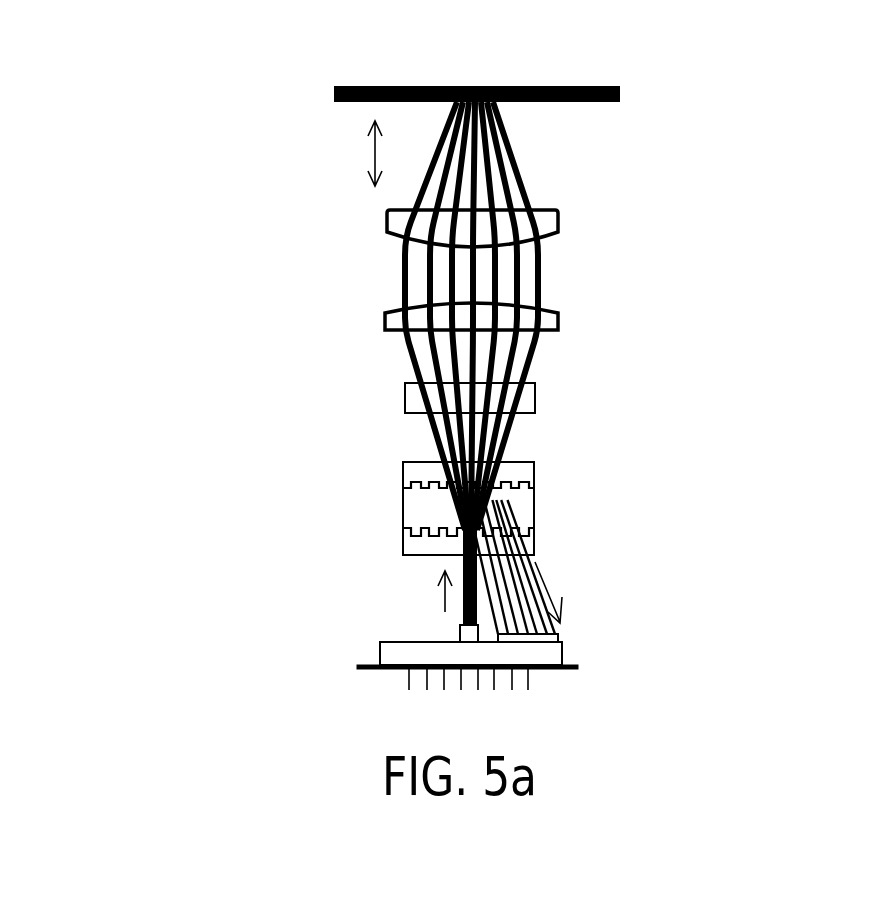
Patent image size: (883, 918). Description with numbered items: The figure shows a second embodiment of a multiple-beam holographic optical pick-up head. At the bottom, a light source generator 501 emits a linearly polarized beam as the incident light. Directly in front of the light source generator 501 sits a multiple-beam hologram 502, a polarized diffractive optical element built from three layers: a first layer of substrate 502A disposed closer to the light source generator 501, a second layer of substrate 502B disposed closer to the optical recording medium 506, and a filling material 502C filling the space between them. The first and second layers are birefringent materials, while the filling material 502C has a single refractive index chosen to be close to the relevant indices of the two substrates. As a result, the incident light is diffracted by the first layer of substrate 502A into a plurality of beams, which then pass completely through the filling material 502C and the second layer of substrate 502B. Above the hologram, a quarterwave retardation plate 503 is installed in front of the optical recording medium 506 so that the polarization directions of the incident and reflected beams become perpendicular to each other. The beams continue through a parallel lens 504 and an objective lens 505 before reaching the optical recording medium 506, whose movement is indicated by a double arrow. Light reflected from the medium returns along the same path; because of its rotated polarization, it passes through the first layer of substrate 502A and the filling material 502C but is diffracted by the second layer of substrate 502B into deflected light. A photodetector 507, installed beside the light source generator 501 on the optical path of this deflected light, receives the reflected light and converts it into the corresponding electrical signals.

The light source generator 501 is at (456, 628).
The multiple-beam hologram 502 is at (403, 468).
The first layer of substrate 502A is at (523, 545).
The second layer of substrate 502B is at (518, 472).
The filling material 502C is at (415, 522).
The quarterwave retardation plate 503 is at (403, 398).
The parallel lens 504 is at (570, 312).
The objective lens 505 is at (565, 212).
The optical recording medium 506 is at (503, 134).
The photodetector 507 is at (562, 636).